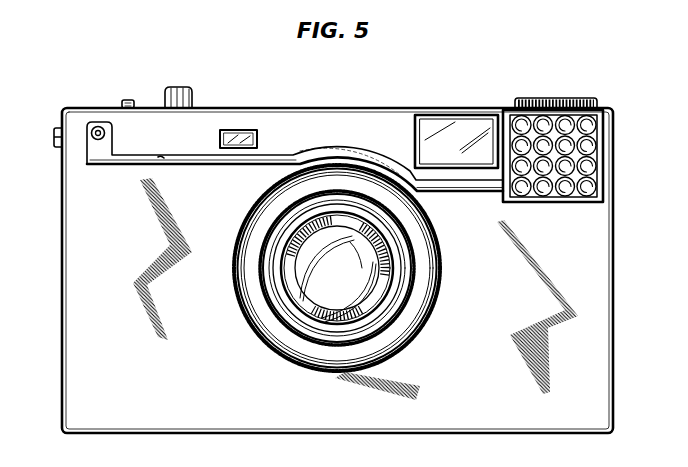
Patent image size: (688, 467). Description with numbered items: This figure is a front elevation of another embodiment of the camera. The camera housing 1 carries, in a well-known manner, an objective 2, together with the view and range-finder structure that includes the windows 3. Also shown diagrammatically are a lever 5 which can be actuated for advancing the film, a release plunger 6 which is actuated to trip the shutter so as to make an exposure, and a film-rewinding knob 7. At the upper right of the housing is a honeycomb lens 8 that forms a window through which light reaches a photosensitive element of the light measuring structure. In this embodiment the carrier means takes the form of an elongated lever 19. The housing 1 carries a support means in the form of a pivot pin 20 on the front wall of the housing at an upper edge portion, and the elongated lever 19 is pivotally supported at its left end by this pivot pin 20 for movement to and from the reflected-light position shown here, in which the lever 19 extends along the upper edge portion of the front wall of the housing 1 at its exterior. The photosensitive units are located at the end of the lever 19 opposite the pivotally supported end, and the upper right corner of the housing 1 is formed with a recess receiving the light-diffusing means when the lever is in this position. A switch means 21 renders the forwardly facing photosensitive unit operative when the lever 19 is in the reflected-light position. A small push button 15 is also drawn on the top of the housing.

The camera housing 1 is at (578, 272).
The objective 2 is at (313, 290).
The windows 3 is at (235, 137).
The lever 5 is at (55, 135).
The release plunger 6 is at (172, 95).
The film-rewinding knob 7 is at (545, 104).
The honeycomb lens 8 is at (585, 150).
The push button 15 is at (129, 100).
The elongated lever 19 is at (445, 186).
The pivot pin 20 is at (95, 127).
The switch means 21 is at (160, 158).